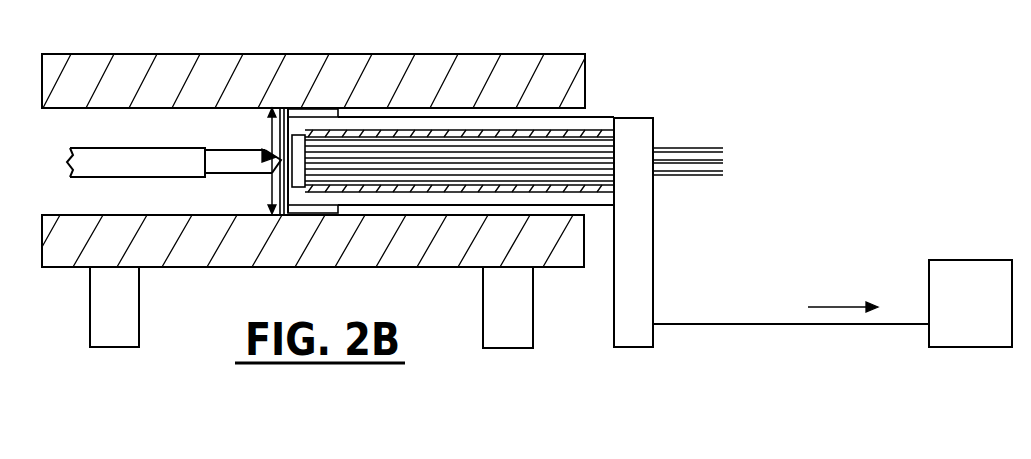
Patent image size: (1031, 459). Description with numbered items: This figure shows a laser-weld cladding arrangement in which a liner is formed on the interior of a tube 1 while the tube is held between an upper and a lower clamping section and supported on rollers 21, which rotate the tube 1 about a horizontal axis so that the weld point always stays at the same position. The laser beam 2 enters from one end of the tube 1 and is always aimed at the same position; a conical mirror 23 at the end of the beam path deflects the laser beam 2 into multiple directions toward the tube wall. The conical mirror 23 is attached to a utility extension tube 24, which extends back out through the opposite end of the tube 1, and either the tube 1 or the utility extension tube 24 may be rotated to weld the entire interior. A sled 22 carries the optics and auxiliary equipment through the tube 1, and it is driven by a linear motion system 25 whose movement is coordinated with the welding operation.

The tube 1 is at (141, 66).
The laser beam 2 is at (90, 162).
The rollers 21 is at (105, 317).
The sled 22 is at (313, 108).
The conical mirror 23 is at (273, 147).
The utility extension tube 24 is at (457, 132).
The linear motion system 25 is at (948, 325).